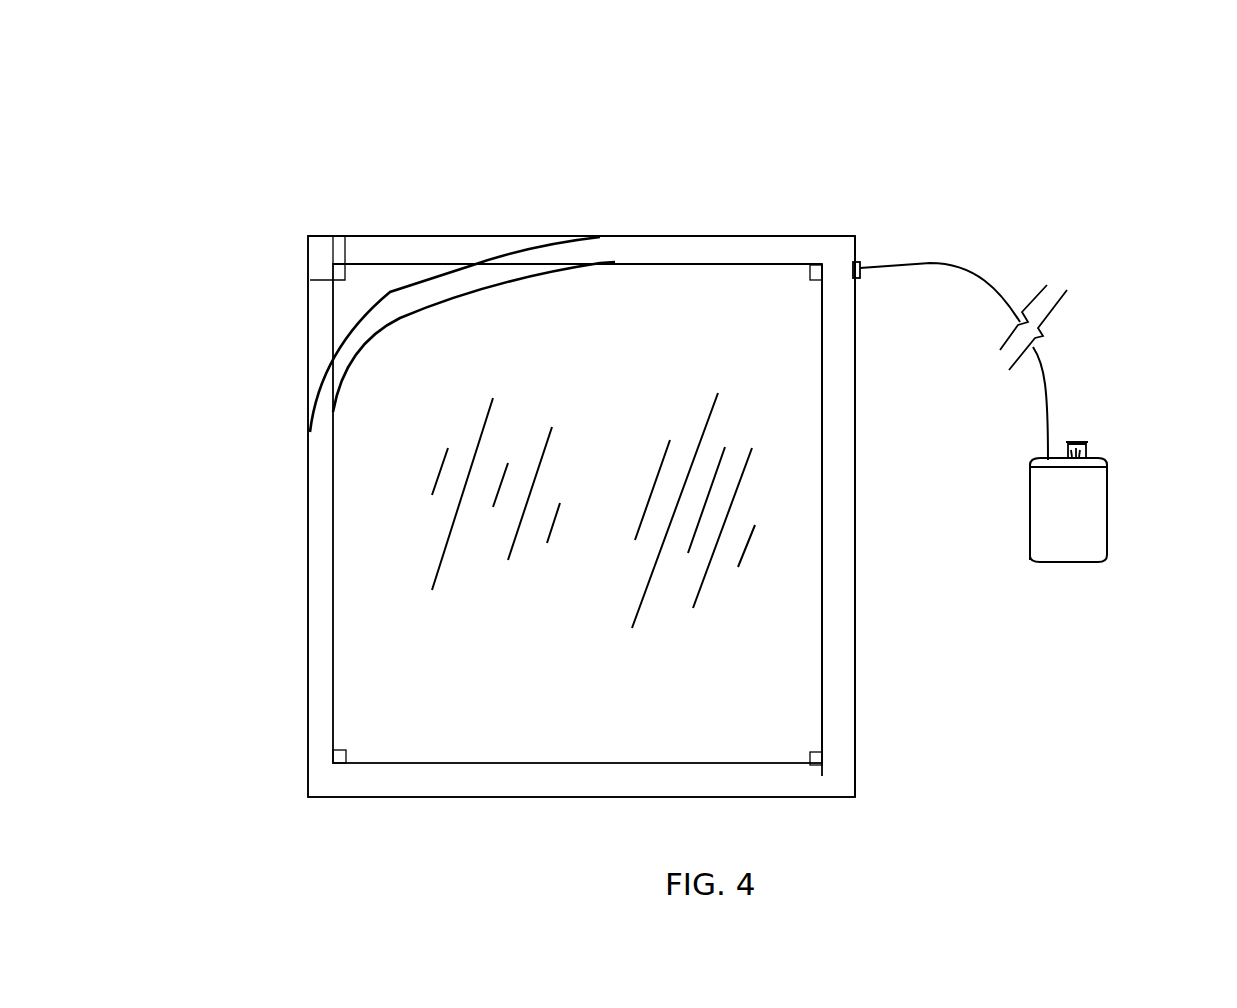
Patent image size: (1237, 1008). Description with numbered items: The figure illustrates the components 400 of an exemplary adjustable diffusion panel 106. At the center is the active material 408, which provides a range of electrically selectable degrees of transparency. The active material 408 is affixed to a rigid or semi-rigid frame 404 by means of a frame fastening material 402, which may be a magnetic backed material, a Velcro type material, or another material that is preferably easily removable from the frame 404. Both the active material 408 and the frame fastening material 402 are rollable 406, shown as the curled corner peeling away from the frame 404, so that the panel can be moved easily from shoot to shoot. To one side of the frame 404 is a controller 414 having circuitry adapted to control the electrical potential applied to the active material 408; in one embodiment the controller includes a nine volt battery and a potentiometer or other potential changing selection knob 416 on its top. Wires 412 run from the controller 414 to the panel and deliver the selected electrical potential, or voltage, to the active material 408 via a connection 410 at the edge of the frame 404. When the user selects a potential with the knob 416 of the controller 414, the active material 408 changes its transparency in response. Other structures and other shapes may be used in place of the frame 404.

The components 400 is at (1063, 120).
The frame fastening material 402 is at (684, 255).
The frame 404 is at (432, 250).
The adjustable diffusion panel 106 is at (822, 238).
The rollable 406 is at (375, 333).
The active material 408 is at (375, 462).
The connection 410 is at (862, 265).
The wires 412 is at (975, 268).
The controller 414 is at (1085, 520).
The selection knob 416 is at (1085, 450).